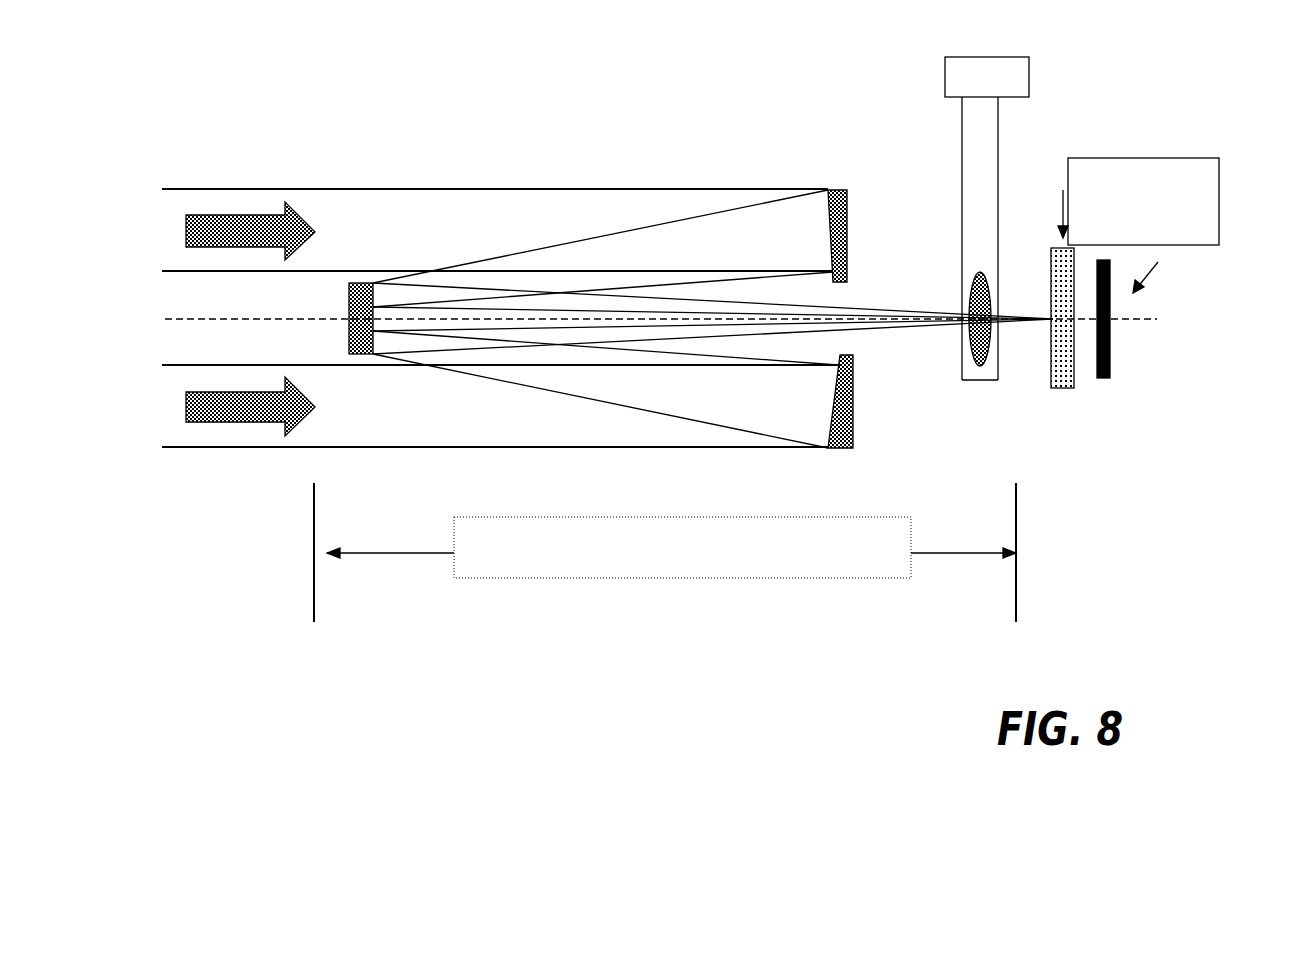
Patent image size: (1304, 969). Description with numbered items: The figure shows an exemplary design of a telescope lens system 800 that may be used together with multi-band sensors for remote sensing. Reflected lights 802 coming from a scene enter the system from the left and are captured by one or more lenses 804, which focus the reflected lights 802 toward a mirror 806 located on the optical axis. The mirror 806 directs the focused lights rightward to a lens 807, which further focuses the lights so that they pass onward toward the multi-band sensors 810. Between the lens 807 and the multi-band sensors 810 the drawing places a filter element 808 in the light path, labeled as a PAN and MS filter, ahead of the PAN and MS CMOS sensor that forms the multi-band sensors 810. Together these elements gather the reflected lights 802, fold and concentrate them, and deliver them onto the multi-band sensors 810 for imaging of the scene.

The telescope optical system 800 is at (659, 371).
The reflected lights 802 is at (218, 319).
The lenses 804 is at (860, 319).
The mirror 806 is at (361, 341).
The lens 807 is at (987, 234).
The PAN and MS filter 808 is at (1070, 265).
The multi-band sensors 810 is at (1176, 279).